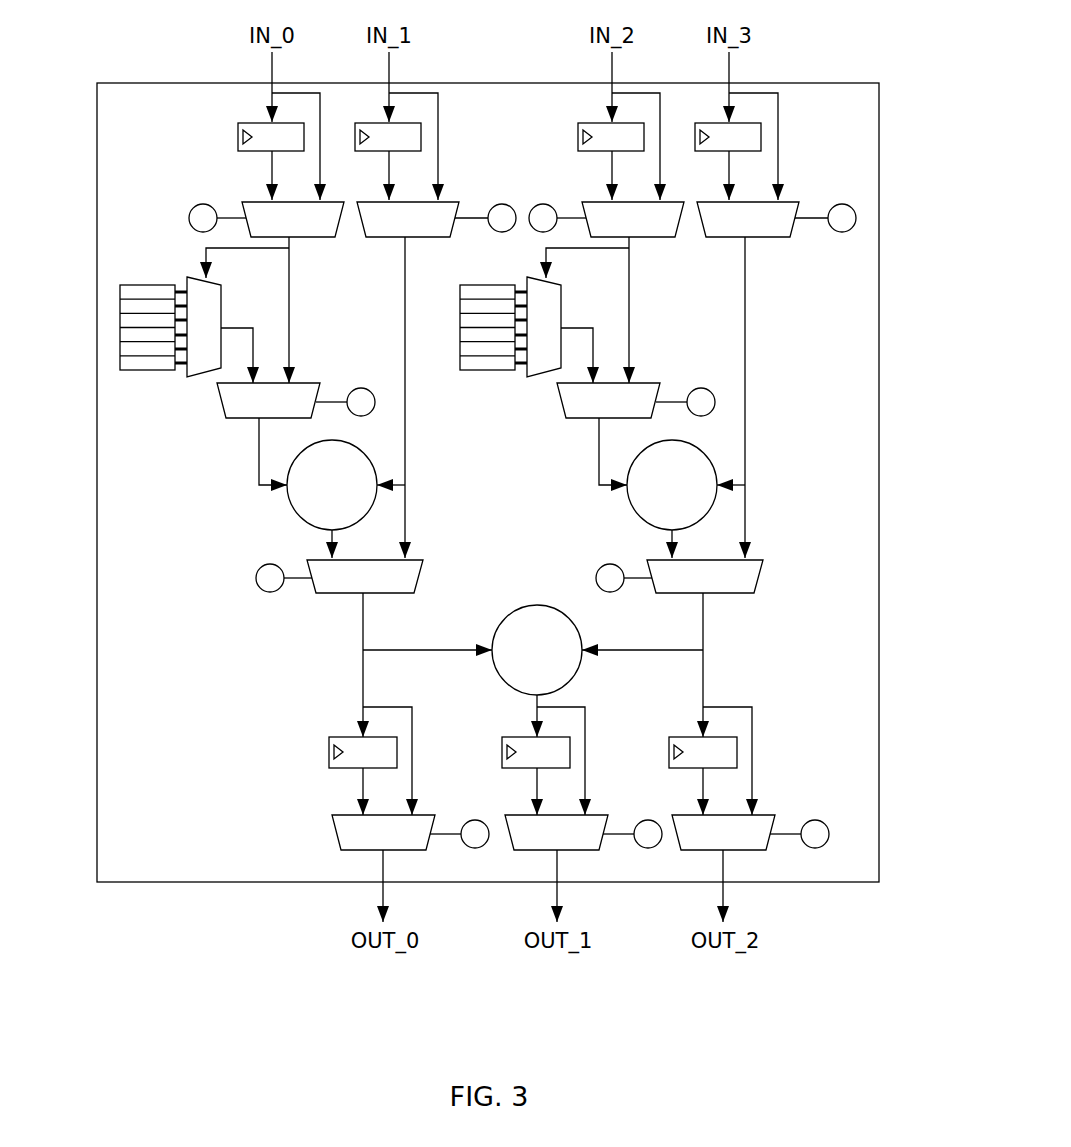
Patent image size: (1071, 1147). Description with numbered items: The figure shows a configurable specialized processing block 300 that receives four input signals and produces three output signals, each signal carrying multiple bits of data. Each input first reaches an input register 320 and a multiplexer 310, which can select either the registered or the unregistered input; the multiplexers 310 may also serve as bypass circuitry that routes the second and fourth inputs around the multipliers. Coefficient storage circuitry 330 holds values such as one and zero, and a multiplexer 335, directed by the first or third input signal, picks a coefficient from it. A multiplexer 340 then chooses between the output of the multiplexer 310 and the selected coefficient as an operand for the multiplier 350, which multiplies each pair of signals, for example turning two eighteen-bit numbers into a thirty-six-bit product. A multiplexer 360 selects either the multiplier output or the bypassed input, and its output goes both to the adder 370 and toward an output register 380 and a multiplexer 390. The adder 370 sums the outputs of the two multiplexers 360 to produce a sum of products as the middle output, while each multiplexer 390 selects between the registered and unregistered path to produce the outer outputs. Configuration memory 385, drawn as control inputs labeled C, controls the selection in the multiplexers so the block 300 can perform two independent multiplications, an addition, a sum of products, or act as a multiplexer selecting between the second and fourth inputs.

The configurable specialized processing block 300 is at (452, 83).
The multiplexer 310 is at (273, 230).
The input register 320 is at (257, 148).
The coefficient storage circuitry 330 is at (152, 285).
The multiplexer 335 is at (200, 378).
The multiplexer 340 is at (248, 411).
The multiplier 350 is at (300, 516).
The multiplexer 360 is at (345, 588).
The adder 370 is at (505, 683).
The output register 380 is at (348, 764).
The configuration memory 385 is at (213, 206).
The multiplexer 390 is at (363, 843).